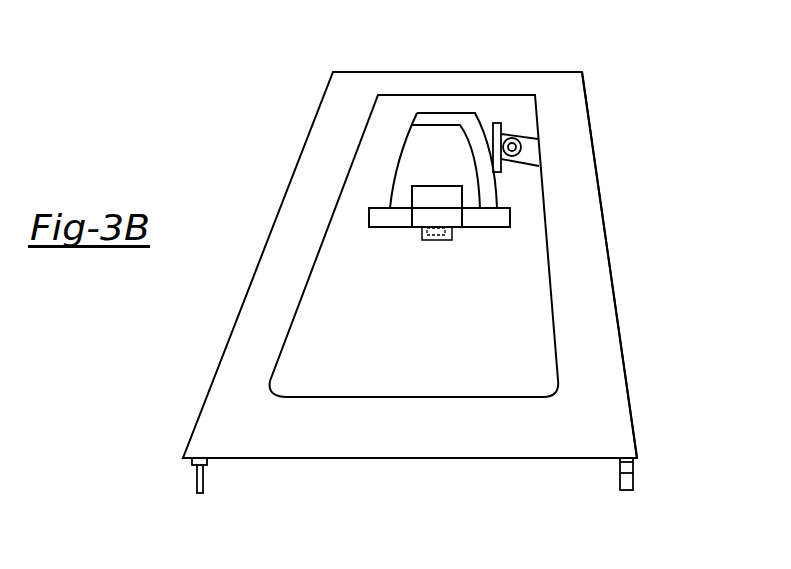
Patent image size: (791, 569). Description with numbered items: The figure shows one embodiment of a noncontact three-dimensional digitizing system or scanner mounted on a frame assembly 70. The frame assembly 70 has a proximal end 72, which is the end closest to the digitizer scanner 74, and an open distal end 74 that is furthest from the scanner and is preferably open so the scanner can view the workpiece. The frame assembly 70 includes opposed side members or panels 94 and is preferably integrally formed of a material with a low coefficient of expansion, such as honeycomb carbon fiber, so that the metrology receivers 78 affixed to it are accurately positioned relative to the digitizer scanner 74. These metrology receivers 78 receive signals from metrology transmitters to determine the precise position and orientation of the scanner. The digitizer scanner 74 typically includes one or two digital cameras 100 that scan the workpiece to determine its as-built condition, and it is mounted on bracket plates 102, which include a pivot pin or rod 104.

The frame assembly 70 is at (614, 182).
The proximal end 72 is at (552, 83).
The 3D digitizer scanner 74 is at (434, 142).
The metrology receivers 78 is at (203, 485).
The side members or panels 94 is at (588, 278).
The digital cameras 100 is at (430, 205).
The bracket plates 102 is at (530, 147).
The pivot pin or rod 104 is at (507, 138).